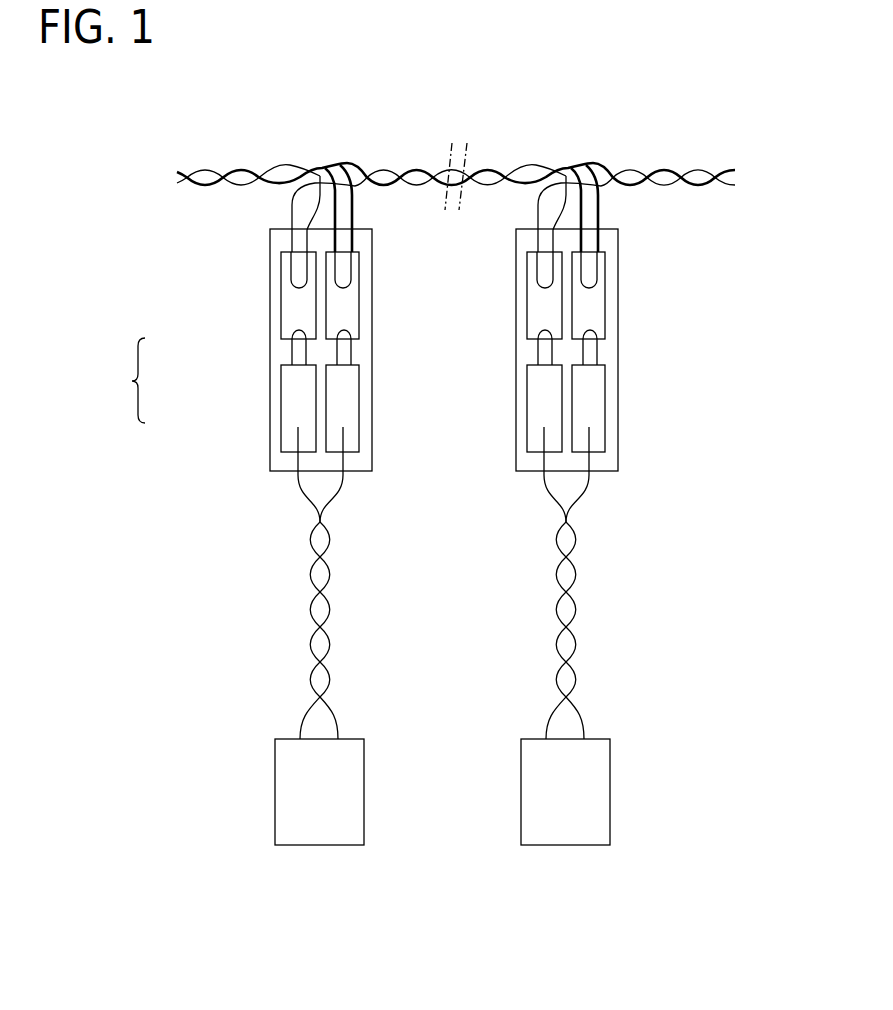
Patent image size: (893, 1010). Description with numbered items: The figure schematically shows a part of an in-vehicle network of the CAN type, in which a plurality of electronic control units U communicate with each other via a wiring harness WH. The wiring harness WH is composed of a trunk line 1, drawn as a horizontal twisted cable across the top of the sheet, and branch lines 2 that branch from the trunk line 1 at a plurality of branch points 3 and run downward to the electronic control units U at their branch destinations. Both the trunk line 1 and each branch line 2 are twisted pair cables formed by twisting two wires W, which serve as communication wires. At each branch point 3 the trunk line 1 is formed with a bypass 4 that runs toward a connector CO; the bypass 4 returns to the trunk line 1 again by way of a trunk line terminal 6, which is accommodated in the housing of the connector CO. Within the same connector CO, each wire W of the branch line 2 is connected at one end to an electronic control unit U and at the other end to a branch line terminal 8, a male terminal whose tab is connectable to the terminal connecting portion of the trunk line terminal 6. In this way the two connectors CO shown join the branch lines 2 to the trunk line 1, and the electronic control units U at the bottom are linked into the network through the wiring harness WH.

The trunk line 1 is at (180, 188).
The branch line 2 is at (302, 537).
The branch point 3 is at (320, 160).
The bypass 4 is at (360, 202).
The trunk line terminal 6 is at (281, 296).
The branch line terminal 8 is at (281, 412).
The connector CO is at (269, 352).
The wire W is at (244, 171).
The wiring harness WH is at (122, 380).
The electronic control unit U is at (285, 795).